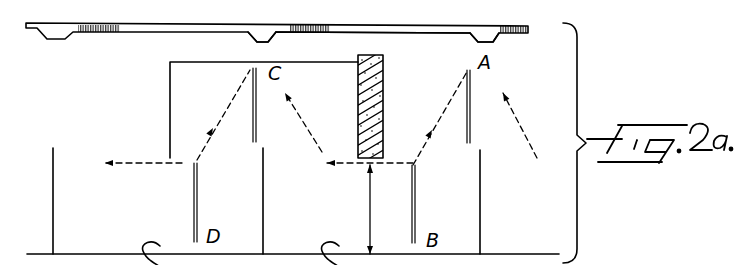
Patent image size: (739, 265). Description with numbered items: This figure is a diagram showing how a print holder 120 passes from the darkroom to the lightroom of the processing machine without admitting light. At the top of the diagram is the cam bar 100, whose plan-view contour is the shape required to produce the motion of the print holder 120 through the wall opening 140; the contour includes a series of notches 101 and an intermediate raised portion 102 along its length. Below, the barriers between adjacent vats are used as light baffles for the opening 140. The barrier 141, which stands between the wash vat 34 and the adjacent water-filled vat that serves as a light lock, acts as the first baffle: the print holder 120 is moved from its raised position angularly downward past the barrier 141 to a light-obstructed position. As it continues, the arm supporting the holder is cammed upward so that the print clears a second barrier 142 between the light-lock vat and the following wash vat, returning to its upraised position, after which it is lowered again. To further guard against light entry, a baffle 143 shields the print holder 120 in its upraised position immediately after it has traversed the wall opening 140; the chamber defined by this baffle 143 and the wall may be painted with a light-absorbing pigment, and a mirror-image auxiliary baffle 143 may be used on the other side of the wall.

The wash vat 34 is at (519, 253).
The cam bar 100 is at (135, 38).
The grooves in rail 101 is at (252, 41).
The rail section between grooves 102 is at (360, 33).
The print holder 120 is at (486, 94).
The opening 140 is at (374, 209).
The barrier 141 is at (482, 192).
The second barrier 142 is at (265, 205).
The baffle 143 is at (169, 102).